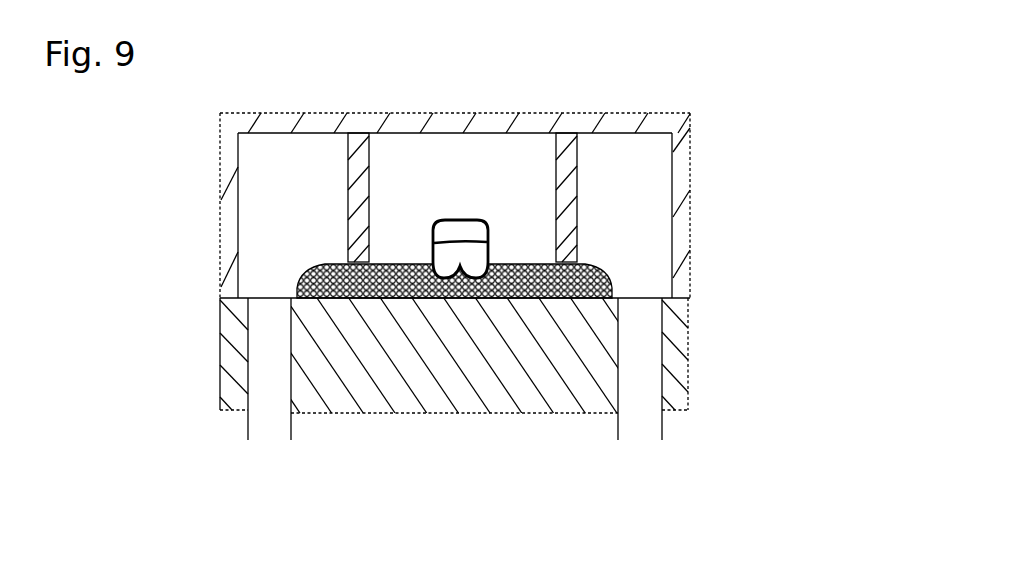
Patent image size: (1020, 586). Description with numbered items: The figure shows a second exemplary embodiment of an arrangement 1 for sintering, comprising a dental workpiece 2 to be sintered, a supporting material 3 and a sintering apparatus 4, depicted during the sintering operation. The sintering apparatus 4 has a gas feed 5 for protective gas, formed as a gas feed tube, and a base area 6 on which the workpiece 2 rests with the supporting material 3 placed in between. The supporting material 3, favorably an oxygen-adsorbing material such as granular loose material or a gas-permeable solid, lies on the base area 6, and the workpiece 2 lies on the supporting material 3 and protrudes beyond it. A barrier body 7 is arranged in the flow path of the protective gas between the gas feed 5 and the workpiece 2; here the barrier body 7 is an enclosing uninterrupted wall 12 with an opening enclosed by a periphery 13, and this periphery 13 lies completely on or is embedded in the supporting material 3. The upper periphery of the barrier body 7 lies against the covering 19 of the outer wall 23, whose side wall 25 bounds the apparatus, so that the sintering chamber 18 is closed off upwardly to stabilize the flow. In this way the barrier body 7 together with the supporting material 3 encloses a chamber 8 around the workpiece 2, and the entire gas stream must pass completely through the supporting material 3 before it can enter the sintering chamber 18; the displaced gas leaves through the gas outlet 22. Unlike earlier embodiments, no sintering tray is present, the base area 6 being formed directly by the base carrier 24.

The arrangement 1 is at (736, 112).
The dental workpiece 2 is at (467, 235).
The supporting material 3 is at (600, 283).
The sintering apparatus 4 is at (691, 203).
The gas feed 5 is at (260, 368).
The base area 6 is at (573, 303).
The barrier body 7 is at (359, 180).
The chamber 8 is at (472, 165).
The enclosing uninterrupted wall 12 is at (352, 138).
The periphery 13 is at (337, 298).
The sintering chamber 18 is at (413, 163).
The covering 19 is at (543, 130).
The gas outlet 22 is at (635, 387).
The outer wall 23 is at (228, 230).
The base carrier 24 is at (357, 387).
The side wall 25 is at (220, 163).